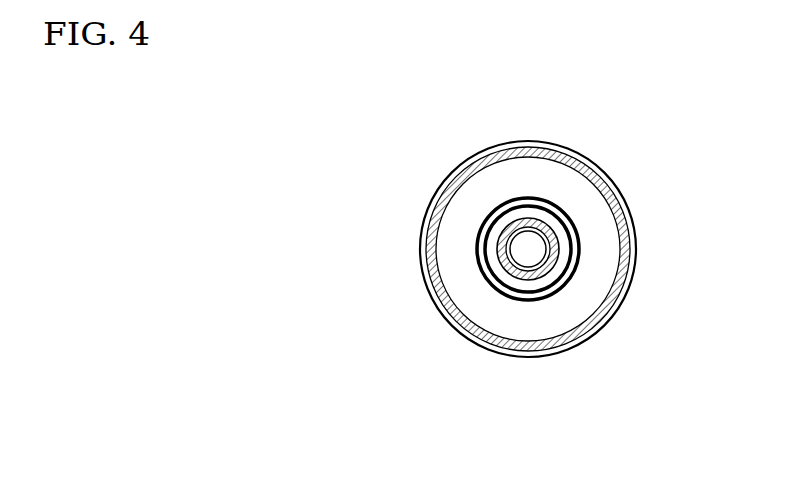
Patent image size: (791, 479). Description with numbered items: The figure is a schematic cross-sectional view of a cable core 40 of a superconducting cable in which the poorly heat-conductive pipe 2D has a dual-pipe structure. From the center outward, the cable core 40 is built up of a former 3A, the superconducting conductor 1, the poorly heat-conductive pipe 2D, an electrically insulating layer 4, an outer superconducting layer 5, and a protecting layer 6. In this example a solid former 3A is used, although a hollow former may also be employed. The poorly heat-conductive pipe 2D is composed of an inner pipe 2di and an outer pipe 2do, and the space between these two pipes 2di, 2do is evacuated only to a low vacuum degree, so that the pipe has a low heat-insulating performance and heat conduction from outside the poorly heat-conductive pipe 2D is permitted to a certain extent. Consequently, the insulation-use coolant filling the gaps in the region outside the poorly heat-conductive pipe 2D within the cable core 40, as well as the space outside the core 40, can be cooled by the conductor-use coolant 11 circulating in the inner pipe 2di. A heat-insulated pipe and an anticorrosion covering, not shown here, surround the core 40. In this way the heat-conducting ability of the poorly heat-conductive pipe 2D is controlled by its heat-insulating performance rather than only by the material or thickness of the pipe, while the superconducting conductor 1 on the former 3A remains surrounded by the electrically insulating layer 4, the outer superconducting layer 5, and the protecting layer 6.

The cable core 40 is at (714, 130).
The protecting layer 6 is at (528, 283).
The outer superconducting layer 5 is at (528, 283).
The electrically insulating layer 4 is at (501, 284).
The poorly heat-conductive pipe 2D is at (331, 290).
The outer pipe 2do is at (448, 261).
The inner pipe 2di is at (456, 278).
The former 3A is at (455, 233).
The conductor-use coolant 11 is at (499, 180).
The superconducting conductor 1 is at (458, 242).